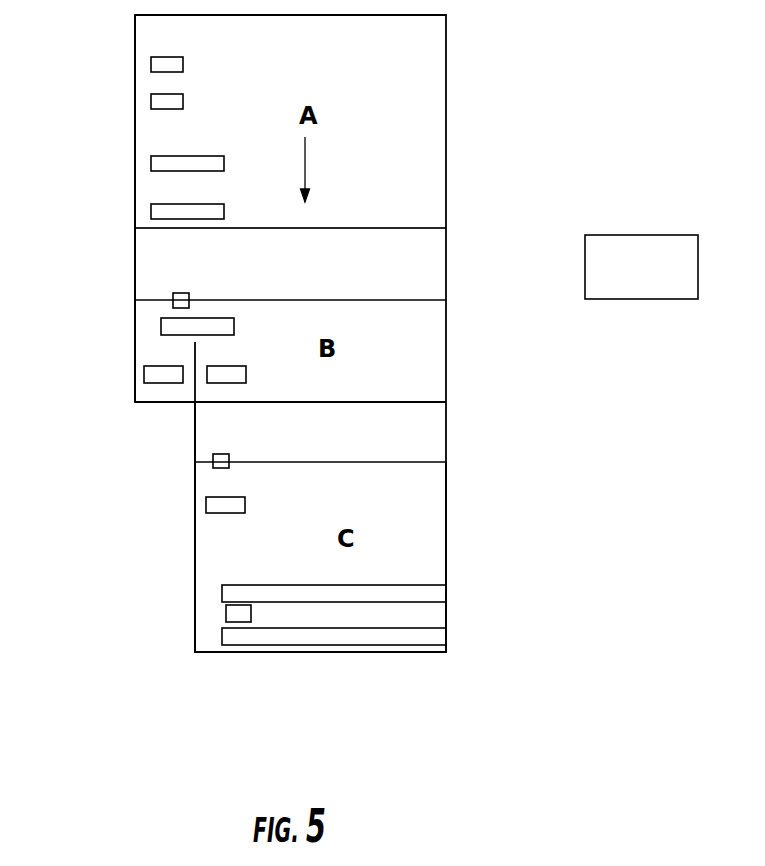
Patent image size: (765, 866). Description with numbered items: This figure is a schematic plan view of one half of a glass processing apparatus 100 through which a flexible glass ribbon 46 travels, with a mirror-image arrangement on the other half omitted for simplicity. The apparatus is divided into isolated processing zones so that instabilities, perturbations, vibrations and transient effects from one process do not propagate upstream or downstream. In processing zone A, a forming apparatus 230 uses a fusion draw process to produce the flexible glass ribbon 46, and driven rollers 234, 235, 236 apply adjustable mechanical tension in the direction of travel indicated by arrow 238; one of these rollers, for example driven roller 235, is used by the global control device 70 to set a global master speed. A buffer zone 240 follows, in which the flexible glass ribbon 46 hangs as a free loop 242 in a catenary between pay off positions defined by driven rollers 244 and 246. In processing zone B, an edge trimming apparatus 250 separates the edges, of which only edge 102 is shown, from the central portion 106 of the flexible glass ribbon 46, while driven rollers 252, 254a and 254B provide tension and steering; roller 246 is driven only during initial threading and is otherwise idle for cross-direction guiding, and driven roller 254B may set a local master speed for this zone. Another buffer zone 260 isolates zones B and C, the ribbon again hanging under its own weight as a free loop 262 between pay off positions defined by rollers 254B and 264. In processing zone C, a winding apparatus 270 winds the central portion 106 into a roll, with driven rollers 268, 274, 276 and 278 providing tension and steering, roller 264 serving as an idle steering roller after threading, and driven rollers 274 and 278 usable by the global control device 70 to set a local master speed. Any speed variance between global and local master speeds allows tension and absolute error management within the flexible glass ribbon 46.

The glass processing apparatus 100 is at (515, 175).
The edge 102 is at (128, 287).
The central portion 106 is at (228, 547).
The flexible glass ribbon 46 is at (423, 522).
The global control device 70 is at (630, 247).
The forming apparatus 230 is at (422, 98).
The driven roller 234 is at (151, 64).
The driven roller 235 is at (151, 101).
The driven roller 236 is at (151, 163).
The driven roller 244 is at (151, 211).
The arrow 238 is at (305, 167).
The buffer zone 240 is at (417, 282).
The free loop 242 is at (175, 248).
The driven roller 246 is at (189, 297).
The edge trimming apparatus 250 is at (405, 368).
The driven roller 252 is at (161, 327).
The driven roller 254a is at (144, 374).
The driven roller 254B is at (246, 374).
The buffer zone 260 is at (422, 437).
The free loop 262 is at (223, 418).
The driven roller 264 is at (213, 464).
The driven roller 268 is at (245, 505).
The winding apparatus 270 is at (330, 639).
The driven roller 274 is at (222, 590).
The driven roller 276 is at (242, 622).
The driven roller 278 is at (370, 645).